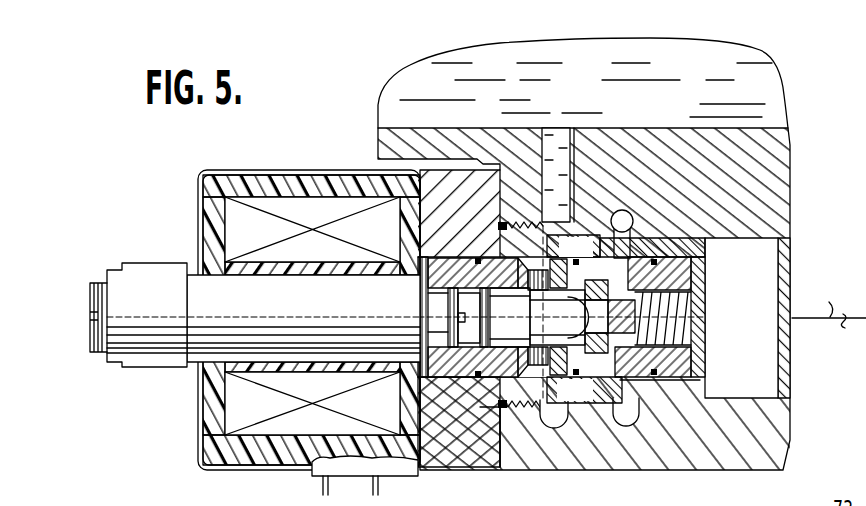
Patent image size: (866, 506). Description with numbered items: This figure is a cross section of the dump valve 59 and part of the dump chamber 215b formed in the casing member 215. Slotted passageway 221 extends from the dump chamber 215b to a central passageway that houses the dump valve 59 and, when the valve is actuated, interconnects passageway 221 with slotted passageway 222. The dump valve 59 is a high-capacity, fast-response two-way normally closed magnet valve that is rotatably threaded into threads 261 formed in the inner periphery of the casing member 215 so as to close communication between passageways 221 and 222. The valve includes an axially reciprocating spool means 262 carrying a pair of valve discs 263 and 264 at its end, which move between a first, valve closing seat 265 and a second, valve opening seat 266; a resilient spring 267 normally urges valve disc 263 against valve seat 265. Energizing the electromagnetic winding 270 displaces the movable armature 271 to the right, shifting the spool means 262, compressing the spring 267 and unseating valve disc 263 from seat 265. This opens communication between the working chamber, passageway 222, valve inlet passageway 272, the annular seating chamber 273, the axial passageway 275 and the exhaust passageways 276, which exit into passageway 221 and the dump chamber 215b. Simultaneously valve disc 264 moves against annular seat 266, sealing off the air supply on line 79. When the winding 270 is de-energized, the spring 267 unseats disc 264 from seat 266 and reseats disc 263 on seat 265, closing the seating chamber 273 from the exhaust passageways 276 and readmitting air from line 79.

The dump valve 59 is at (318, 171).
The line 79 is at (829, 308).
The casing member 215 is at (760, 448).
The dump chamber 215b is at (736, 98).
The passageway 221 is at (562, 148).
The passageway 222 is at (625, 418).
The threads 261 is at (505, 410).
The spool means 262 is at (491, 385).
The valve disc 263 is at (584, 390).
The valve disc 264 is at (634, 224).
The valve closing seat 265 is at (564, 305).
The valve opening seat 266 is at (706, 350).
The resilient spring 267 is at (664, 320).
The electromagnetic winding 270 is at (383, 245).
The movable armature 271 is at (420, 310).
The valve inlet passageway 272 is at (625, 212).
The annular seating chamber 273 is at (604, 420).
The axial passageway 275 is at (490, 347).
The exhaust passageways 276 is at (538, 408).